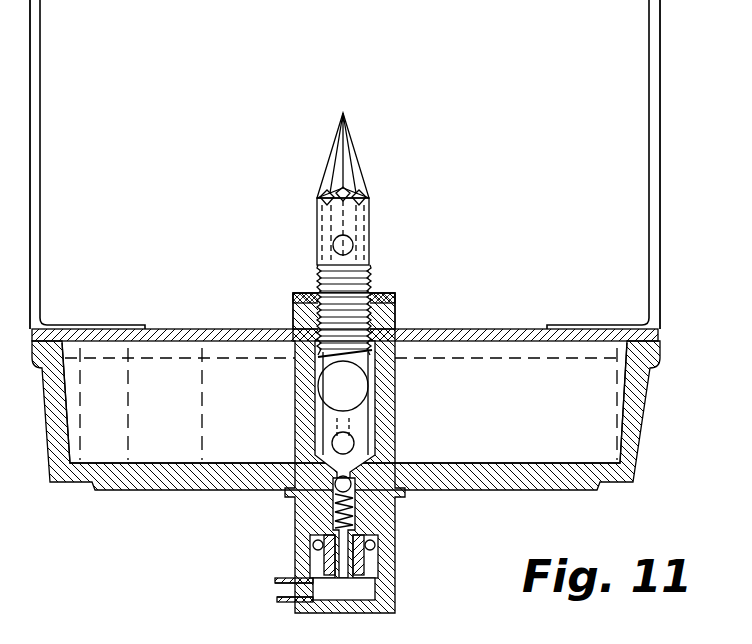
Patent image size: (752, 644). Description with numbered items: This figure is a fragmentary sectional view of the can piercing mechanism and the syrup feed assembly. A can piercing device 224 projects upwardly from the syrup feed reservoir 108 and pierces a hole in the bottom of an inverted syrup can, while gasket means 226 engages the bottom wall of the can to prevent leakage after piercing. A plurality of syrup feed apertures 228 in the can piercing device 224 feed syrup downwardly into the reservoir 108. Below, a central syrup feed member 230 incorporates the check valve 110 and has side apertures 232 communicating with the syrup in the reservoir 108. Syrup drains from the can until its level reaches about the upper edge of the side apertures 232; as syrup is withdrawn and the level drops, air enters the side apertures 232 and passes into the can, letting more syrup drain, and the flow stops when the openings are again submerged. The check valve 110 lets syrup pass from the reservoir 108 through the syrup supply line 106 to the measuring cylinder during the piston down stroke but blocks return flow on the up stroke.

The syrup feed reservoir 108 is at (635, 414).
The can piercing device 224 is at (352, 178).
The syrup feed apertures 228 is at (350, 205).
The gasket means 226 is at (395, 300).
The central syrup feed member 230 is at (392, 397).
The side apertures 232 is at (333, 387).
The check valve 110 is at (338, 487).
The syrup supply line 106 is at (282, 590).